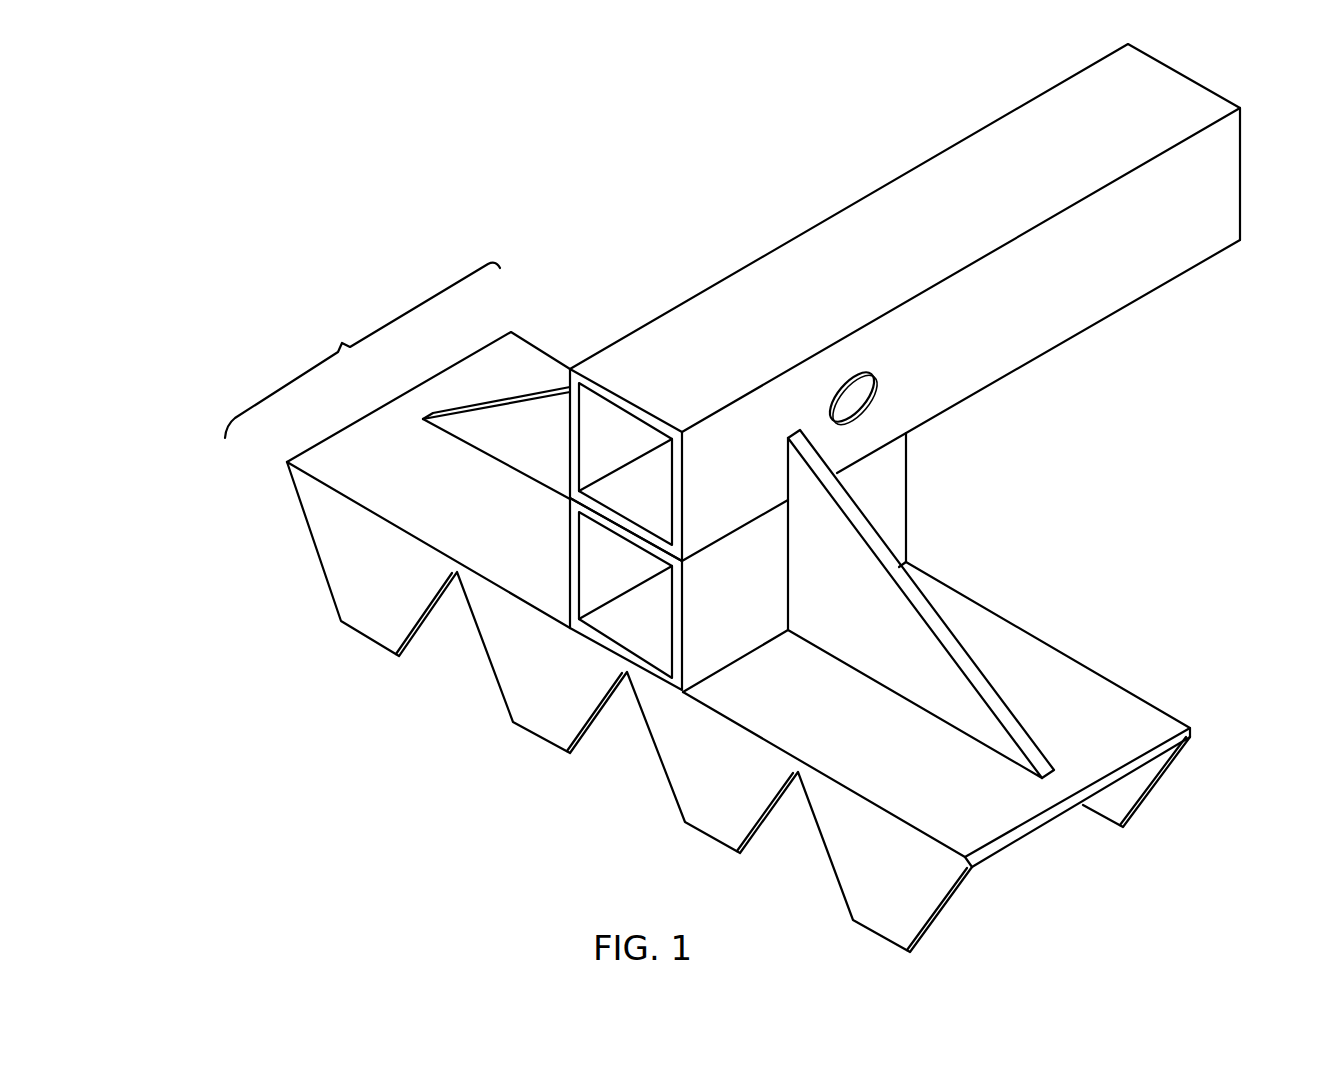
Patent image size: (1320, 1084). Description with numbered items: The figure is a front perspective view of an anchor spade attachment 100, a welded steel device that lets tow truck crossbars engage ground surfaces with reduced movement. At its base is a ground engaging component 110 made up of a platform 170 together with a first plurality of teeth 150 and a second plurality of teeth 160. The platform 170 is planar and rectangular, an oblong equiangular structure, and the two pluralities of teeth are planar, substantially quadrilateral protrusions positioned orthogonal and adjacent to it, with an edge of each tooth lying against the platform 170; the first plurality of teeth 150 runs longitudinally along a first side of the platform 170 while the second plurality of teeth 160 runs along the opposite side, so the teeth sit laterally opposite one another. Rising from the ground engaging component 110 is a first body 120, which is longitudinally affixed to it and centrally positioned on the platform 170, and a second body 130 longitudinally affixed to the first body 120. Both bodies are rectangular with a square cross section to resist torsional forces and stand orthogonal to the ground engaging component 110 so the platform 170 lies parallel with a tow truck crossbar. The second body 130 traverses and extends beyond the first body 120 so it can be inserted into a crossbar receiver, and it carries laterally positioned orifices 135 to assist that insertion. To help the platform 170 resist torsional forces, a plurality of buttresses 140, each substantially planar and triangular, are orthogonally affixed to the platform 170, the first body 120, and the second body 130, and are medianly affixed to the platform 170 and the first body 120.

The anchor spade attachment 100 is at (241, 162).
The ground engaging component 110 is at (362, 350).
The first body 120 is at (908, 505).
The second body 130 is at (861, 199).
The orifices 135 is at (877, 391).
The plurality of buttresses 140 is at (531, 456).
The first plurality of teeth 150 is at (373, 643).
The second plurality of teeth 160 is at (1160, 780).
The platform 170 is at (1084, 664).